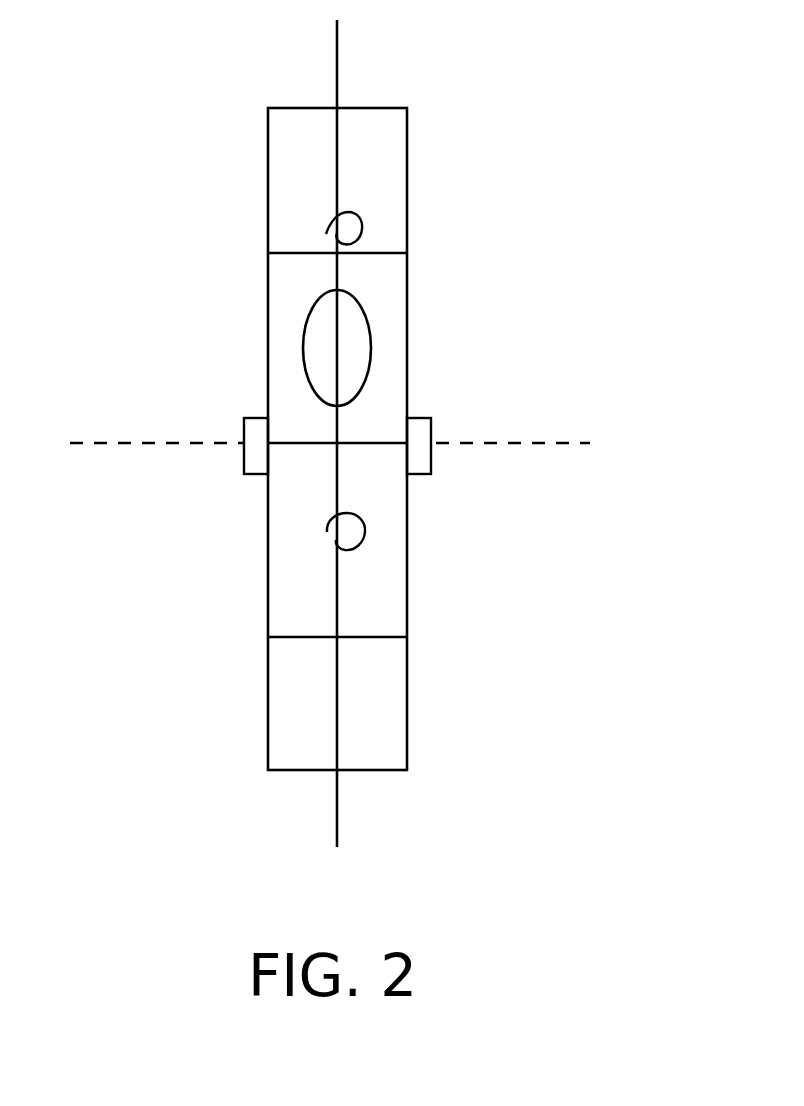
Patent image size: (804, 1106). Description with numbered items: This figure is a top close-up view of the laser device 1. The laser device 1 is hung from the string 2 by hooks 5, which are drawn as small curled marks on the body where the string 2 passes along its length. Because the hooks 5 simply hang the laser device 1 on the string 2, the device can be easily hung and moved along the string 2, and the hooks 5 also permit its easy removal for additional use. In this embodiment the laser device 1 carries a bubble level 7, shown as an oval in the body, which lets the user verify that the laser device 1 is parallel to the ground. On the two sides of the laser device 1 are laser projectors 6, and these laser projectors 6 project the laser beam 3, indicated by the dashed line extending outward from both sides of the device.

The laser device 1 is at (513, 212).
The string 2 is at (337, 40).
The laser beam 3 is at (73, 443).
The hooks 5 is at (320, 211).
The laser projectors 6 is at (260, 455).
The bubble level 7 is at (297, 322).